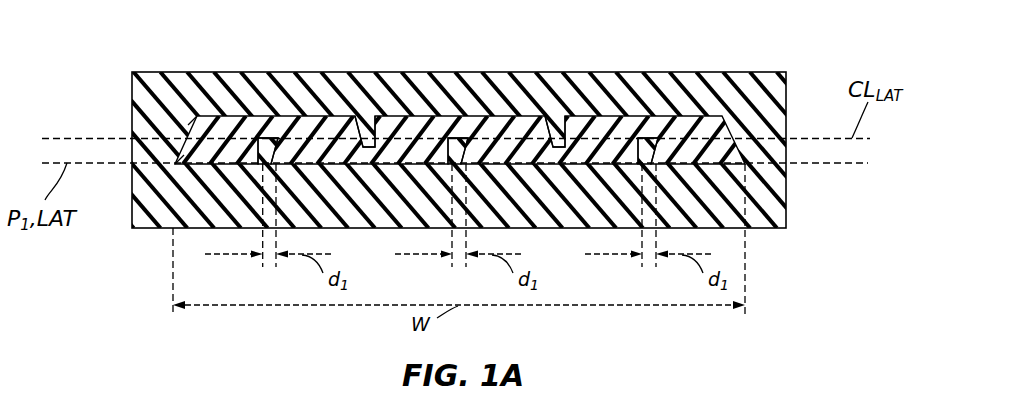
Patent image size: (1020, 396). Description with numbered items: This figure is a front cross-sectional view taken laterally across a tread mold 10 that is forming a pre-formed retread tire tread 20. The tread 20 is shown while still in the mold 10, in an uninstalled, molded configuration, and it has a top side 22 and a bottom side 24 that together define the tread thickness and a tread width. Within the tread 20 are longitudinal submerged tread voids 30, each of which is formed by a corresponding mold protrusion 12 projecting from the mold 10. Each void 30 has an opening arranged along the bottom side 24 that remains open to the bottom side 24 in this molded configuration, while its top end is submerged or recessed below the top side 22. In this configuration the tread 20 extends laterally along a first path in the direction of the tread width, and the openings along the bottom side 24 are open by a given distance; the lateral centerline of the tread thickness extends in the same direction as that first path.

The tread mold 10 is at (710, 72).
The mold protrusion 12 is at (266, 141).
The pre-formed retread tire tread 20 is at (722, 116).
The top side 22 is at (198, 116).
The bottom side 24 is at (175, 164).
The longitudinal submerged tread void 30 is at (258, 141).